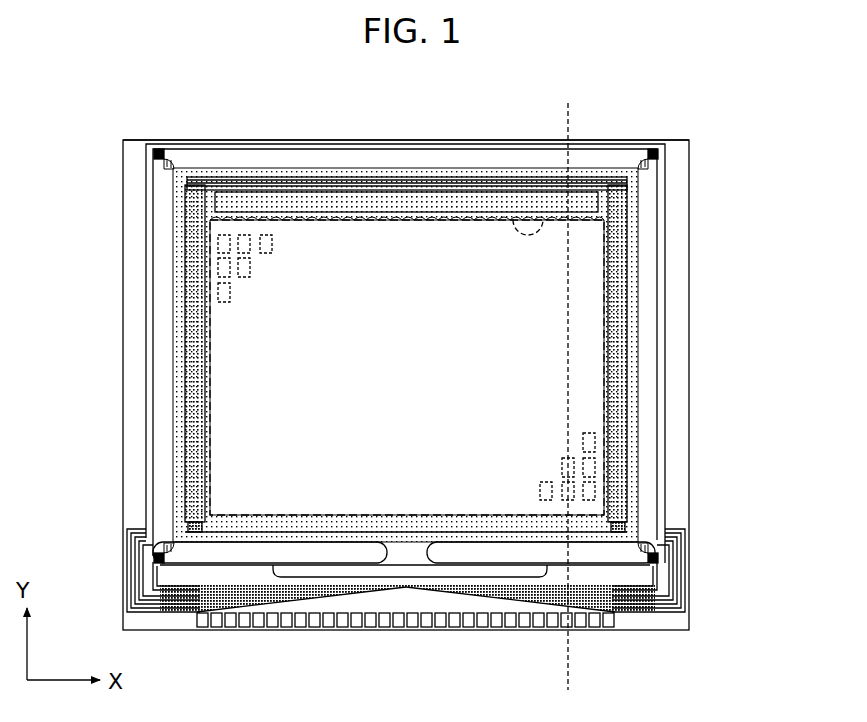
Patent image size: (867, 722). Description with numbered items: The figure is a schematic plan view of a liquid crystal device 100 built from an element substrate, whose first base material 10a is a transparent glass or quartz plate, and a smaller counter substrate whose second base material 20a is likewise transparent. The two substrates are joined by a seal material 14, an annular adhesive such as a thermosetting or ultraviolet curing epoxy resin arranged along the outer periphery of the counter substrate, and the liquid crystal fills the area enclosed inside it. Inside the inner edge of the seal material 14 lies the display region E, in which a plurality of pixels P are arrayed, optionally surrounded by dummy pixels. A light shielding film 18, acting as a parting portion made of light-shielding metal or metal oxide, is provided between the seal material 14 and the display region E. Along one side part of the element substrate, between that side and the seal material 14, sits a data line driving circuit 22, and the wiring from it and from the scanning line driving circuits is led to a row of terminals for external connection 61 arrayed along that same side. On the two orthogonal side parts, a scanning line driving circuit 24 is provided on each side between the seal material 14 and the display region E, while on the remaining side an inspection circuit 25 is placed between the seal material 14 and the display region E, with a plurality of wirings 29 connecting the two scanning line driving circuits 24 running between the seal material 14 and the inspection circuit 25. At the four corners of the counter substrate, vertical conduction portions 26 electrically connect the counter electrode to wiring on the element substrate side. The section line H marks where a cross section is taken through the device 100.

The liquid crystal device 100 is at (684, 104).
The first base material 10a is at (228, 140).
The second base material 20a is at (323, 160).
The wirings 29 is at (371, 170).
The inspection circuit 25 is at (444, 200).
The display region E is at (545, 215).
The seal material 14 is at (650, 300).
The scanning line driving circuit 24 is at (200, 378).
The light shielding film 18 is at (292, 525).
The pixel P is at (231, 295).
The vertical conduction portion 26 is at (155, 153).
The data line driving circuit 22 is at (185, 578).
The terminals for external connection 61 is at (284, 622).
The section line H-H' H is at (568, 82).